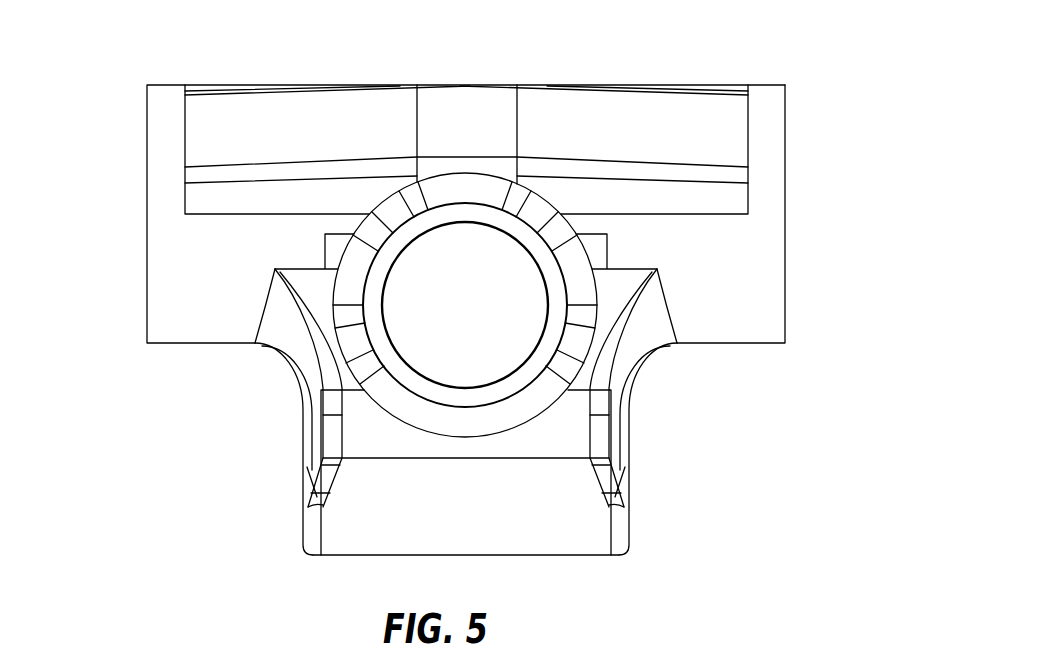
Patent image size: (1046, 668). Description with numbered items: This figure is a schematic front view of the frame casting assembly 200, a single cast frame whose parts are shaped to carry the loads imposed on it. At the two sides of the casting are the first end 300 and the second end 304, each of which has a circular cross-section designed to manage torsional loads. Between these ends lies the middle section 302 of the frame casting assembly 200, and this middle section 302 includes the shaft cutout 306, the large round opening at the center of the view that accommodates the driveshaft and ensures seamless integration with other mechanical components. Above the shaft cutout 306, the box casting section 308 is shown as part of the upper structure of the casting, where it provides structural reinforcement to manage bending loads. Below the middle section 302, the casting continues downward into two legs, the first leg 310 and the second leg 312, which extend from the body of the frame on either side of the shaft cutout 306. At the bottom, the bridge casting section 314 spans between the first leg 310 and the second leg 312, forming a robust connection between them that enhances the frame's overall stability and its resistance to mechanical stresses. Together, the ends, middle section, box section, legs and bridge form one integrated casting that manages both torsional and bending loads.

The frame casting assembly 200 is at (708, 50).
The first end 300 is at (130, 176).
The middle section 302 is at (461, 76).
The second end 304 is at (797, 177).
The shaft cutout 306 is at (482, 318).
The box casting section 308 is at (482, 131).
The first leg 310 is at (629, 459).
The second leg 312 is at (303, 443).
The bridge casting section 314 is at (478, 527).